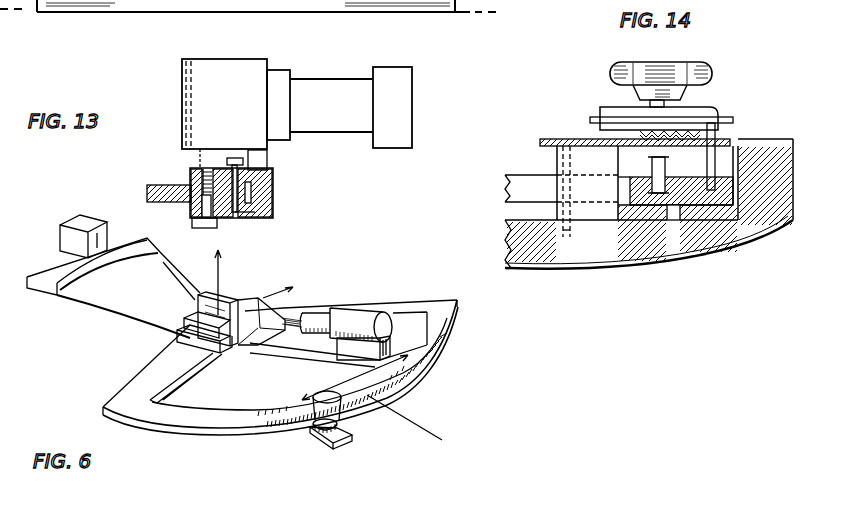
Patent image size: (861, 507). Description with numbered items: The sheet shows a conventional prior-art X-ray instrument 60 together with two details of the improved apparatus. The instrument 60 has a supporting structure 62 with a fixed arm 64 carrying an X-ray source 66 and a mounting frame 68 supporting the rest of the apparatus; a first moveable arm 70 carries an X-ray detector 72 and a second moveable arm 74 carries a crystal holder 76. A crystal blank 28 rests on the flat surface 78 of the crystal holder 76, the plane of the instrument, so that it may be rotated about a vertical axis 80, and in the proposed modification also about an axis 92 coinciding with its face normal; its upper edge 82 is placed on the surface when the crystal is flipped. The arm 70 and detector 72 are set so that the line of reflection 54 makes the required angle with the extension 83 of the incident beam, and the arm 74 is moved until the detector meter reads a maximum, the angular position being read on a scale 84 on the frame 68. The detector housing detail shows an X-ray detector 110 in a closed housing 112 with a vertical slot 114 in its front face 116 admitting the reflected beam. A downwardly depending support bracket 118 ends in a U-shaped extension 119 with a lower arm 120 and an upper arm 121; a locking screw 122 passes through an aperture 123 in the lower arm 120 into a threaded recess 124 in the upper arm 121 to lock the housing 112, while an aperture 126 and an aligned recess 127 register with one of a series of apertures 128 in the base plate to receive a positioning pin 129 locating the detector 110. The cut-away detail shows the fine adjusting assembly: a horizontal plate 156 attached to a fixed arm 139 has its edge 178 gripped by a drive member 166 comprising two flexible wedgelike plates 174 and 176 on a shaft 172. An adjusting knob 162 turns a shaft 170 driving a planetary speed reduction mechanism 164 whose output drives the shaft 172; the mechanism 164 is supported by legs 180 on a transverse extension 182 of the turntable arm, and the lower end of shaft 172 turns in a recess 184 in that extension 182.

In FIG. 13, the X-ray detector 110 is at (336, 73).
In FIG. 13, the detector housing 112 is at (226, 106).
In FIG. 13, the vertical slot 114 is at (185, 83).
In FIG. 13, the front face 116 is at (188, 60).
In FIG. 13, the support bracket 118 is at (253, 160).
In FIG. 13, the U-shaped extension 119 is at (277, 205).
In FIG. 13, the lower arm 120 is at (190, 205).
In FIG. 13, the upper arm 121 is at (190, 169).
In FIG. 13, the locking screw 122 is at (215, 220).
In FIG. 13, the aperture 123 is at (200, 213).
In FIG. 13, the threaded recess 124 is at (202, 185).
In FIG. 13, the aperture 126 is at (275, 175).
In FIG. 13, the recess 127 is at (253, 215).
In FIG. 13, the apertures 128 is at (251, 190).
In FIG. 13, the positioning pin 129 is at (227, 160).
In FIG. 14, the fixed arm 139 is at (572, 268).
In FIG. 14, the horizontal plate 156 is at (548, 138).
In FIG. 14, the adjusting knob 162 is at (610, 73).
In FIG. 14, the speed reduction mechanism 164 is at (705, 108).
In FIG. 14, the drive member 166 is at (633, 160).
In FIG. 14, the shaft 170 is at (645, 104).
In FIG. 14, the shaft 172 is at (650, 163).
In FIG. 14, the flexible wedgelike plate 174 is at (740, 130).
In FIG. 14, the flexible wedgelike plate 176 is at (713, 147).
In FIG. 14, the edge 178 is at (640, 137).
In FIG. 14, the legs 180 is at (733, 120).
In FIG. 14, the transverse extension 182 is at (647, 197).
In FIG. 14, the recess 184 is at (680, 197).
In FIG. 6, the crystal blank 28 is at (195, 308).
In FIG. 6, the line of reflection 54 is at (292, 305).
In FIG. 6, the instrument 60 is at (172, 429).
In FIG. 6, the supporting structure 62 is at (118, 393).
In FIG. 6, the fixed arm 64 is at (90, 288).
In FIG. 6, the X-ray source 66 is at (82, 218).
In FIG. 6, the mounting frame 68 is at (412, 298).
In FIG. 6, the first moveable arm 70 is at (397, 368).
In FIG. 6, the X-ray detector 72 is at (352, 310).
In FIG. 6, the second moveable arm 74 is at (322, 440).
In FIG. 6, the crystal holder 76 is at (217, 357).
In FIG. 6, the flat surface 78 is at (177, 334).
In FIG. 6, the vertical axis 80 is at (220, 273).
In FIG. 6, the upper edge 82 is at (204, 293).
In FIG. 6, the extension 83 is at (404, 420).
In FIG. 6, the scale 84 is at (270, 403).
In FIG. 6, the axis 92 is at (274, 288).